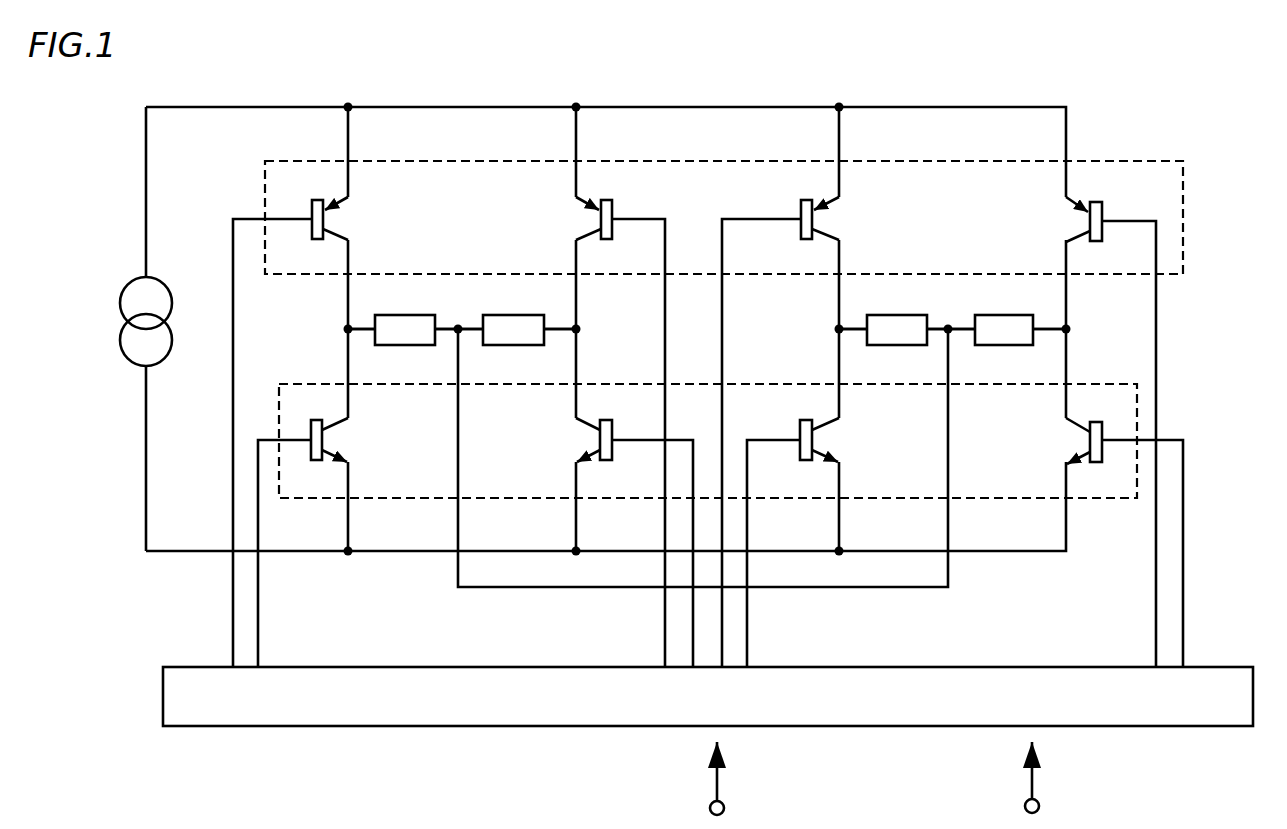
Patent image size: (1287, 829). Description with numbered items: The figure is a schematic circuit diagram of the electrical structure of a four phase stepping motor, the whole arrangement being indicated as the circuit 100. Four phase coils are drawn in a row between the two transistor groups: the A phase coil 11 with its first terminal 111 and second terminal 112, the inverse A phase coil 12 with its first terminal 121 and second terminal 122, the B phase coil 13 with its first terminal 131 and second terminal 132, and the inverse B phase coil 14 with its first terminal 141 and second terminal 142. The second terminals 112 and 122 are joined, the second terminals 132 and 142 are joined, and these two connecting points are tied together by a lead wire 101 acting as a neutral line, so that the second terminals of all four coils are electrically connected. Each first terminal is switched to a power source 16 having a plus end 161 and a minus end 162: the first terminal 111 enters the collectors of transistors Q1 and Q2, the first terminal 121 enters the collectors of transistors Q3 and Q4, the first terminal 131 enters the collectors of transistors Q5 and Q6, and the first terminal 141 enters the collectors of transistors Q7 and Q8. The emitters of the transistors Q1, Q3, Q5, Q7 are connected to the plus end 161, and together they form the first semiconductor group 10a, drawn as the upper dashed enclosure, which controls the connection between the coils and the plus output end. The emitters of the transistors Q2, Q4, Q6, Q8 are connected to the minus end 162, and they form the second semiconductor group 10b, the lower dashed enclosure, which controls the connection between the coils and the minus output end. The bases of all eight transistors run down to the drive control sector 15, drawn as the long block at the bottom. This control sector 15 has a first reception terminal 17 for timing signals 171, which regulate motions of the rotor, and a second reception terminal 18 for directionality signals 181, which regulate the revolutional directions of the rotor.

The amplifier circuit 100 is at (300, 325).
The first semiconductor group 10a is at (1107, 160).
The second semiconductor group 10b is at (1096, 385).
The lead wire 101 is at (590, 588).
The A phase coil 11 is at (405, 315).
The first terminal 111 is at (371, 325).
The second terminal 112 is at (440, 338).
The inverse A phase coil 12 is at (502, 315).
The first terminal 121 is at (560, 303).
The second terminal 122 is at (486, 338).
The B phase coil 13 is at (895, 315).
The first terminal 131 is at (863, 325).
The second terminal 132 is at (932, 338).
The inverse B phase coil 14 is at (992, 315).
The first terminal 141 is at (1050, 303).
The second terminal 142 is at (978, 338).
The drive control sector 15 is at (1180, 727).
The power source 16 is at (140, 338).
The plus end 161 is at (145, 279).
The minus end 162 is at (145, 367).
The first reception terminal 17 is at (760, 782).
The timing signals 171 is at (720, 778).
The second reception terminal 18 is at (1075, 782).
The directionality signals 181 is at (1035, 778).
The transistor Q1 is at (290, 421).
The transistor Q2 is at (303, 531).
The transistor Q3 is at (620, 421).
The transistor Q4 is at (634, 531).
The transistor Q5 is at (780, 421).
The transistor Q6 is at (793, 531).
The transistor Q7 is at (1111, 421).
The transistor Q8 is at (1124, 531).